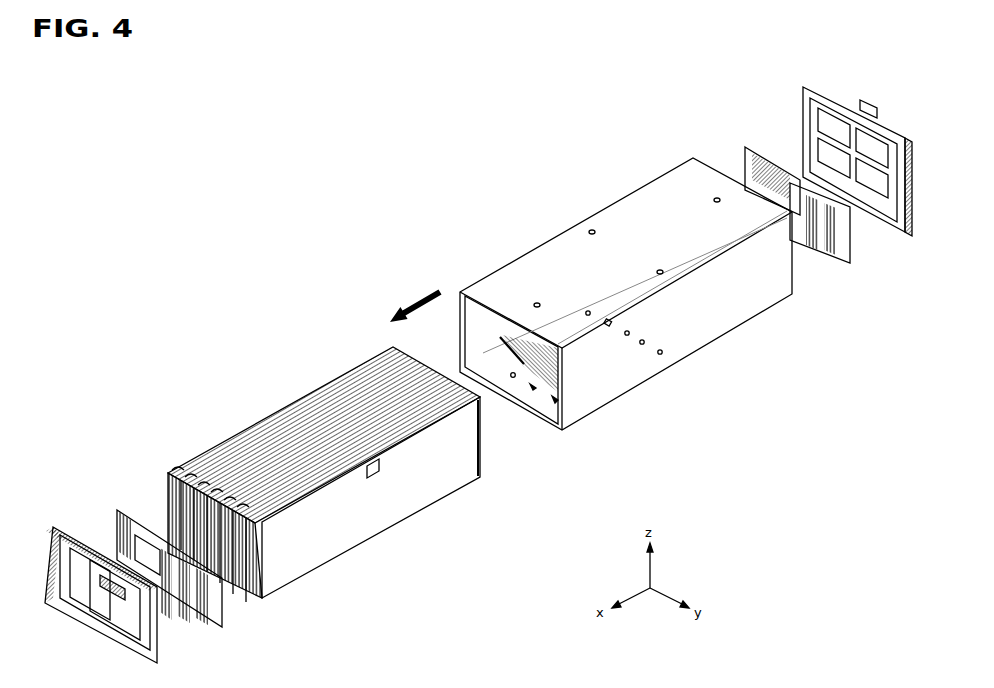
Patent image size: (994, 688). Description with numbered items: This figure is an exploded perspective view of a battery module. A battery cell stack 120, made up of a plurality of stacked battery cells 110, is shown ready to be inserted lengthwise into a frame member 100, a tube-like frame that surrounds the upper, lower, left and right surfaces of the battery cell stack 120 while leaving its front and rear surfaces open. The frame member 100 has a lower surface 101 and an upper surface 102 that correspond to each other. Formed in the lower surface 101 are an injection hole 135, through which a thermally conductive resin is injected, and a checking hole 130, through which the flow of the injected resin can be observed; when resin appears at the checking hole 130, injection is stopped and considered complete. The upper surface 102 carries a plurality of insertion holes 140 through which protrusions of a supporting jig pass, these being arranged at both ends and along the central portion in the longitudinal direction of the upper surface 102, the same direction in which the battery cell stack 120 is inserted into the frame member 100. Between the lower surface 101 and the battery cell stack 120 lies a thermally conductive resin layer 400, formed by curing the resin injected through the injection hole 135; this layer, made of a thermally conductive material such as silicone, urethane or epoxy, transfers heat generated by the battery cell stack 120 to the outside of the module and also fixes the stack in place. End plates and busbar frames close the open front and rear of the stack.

The frame member 100 is at (700, 327).
The lower surface 101 is at (553, 402).
The upper surface 102 is at (546, 258).
The battery cell 110 is at (374, 518).
The battery cell stack 120 is at (246, 450).
The checking hole 130 is at (532, 388).
The injection hole 135 is at (662, 354).
The insertion hole 140 is at (628, 253).
The thermally conductive resin layer 400 is at (500, 337).